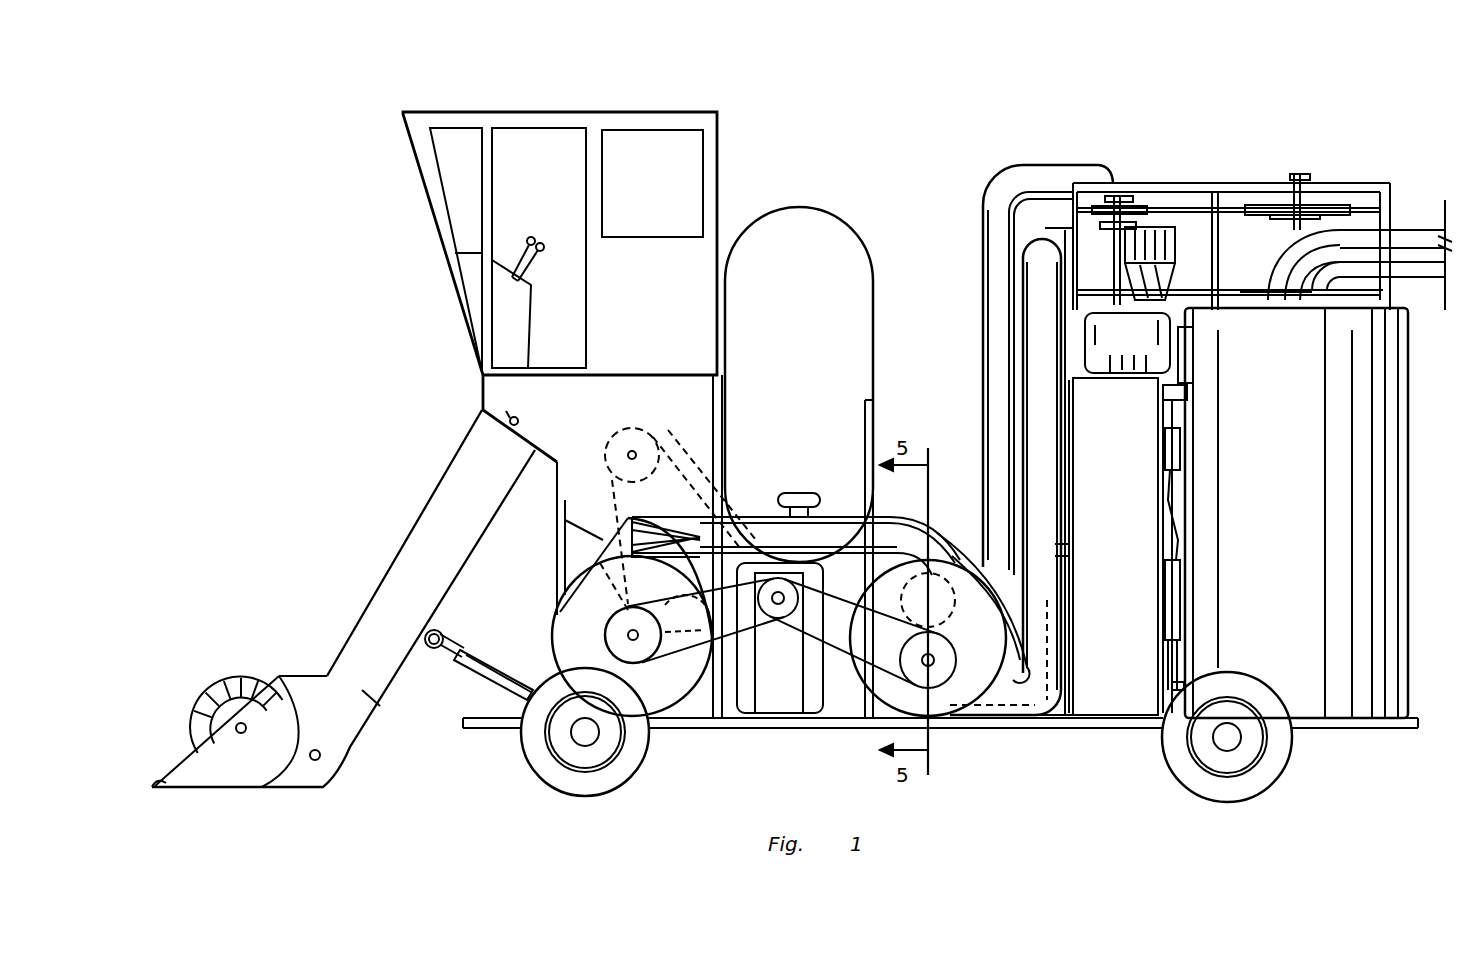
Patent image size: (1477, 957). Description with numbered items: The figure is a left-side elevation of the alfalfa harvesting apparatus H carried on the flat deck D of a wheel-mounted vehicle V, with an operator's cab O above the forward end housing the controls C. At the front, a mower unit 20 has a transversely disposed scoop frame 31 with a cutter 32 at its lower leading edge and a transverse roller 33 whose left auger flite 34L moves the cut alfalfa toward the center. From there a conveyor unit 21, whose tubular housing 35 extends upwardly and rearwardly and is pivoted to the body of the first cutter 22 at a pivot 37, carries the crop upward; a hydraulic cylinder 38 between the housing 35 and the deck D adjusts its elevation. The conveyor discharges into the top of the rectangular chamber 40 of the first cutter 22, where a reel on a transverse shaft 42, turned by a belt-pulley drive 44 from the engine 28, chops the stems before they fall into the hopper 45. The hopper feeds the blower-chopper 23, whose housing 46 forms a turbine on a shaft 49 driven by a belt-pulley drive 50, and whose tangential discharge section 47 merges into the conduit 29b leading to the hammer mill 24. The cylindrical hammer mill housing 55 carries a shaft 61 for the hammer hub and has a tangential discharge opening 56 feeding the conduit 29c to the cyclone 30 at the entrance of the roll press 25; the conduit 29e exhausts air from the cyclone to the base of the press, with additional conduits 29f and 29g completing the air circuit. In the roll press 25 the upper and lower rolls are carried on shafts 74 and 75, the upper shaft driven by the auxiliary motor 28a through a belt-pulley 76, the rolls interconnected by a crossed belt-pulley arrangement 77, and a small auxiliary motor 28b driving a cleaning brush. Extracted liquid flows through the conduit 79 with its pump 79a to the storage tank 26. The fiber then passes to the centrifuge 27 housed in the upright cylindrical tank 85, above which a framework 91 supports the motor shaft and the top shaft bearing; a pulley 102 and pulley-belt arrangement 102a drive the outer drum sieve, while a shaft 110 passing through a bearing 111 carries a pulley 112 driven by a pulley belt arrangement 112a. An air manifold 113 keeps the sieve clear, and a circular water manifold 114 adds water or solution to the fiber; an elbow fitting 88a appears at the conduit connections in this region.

The mower unit 20 is at (188, 679).
The conveyor unit 21 is at (368, 604).
The first cutter 22 is at (702, 407).
The blower-chopper 23 is at (562, 630).
The hammer mill 24 is at (946, 704).
The roll press 25 is at (1126, 509).
The storage tank 26 is at (856, 251).
The centrifuge 27 is at (1400, 585).
The engine 28 is at (745, 710).
The auxiliary motor 28a is at (1135, 348).
The small auxiliary motor 28b is at (1176, 432).
The conduit 29b is at (886, 528).
The conduit 29c is at (1044, 593).
The conduit 29e is at (992, 476).
The conduit 29f is at (1168, 690).
The conduit 29g is at (1430, 246).
The cyclone 30 is at (1160, 253).
The scoop frame 31 is at (236, 770).
The cutter 32 is at (160, 786).
The transverse roller 33 is at (196, 732).
The left auger flite 34L is at (212, 716).
The tubular housing 35 is at (393, 705).
The pivot 37 is at (526, 412).
The hydraulic cylinder 38 is at (484, 677).
The rectangular chamber 40 is at (652, 415).
The transverse shaft 42 is at (612, 450).
The belt-pulley drive 44 is at (632, 490).
The hopper 45 is at (607, 545).
The blower-chopper housing 46 is at (574, 652).
The tangential discharge section 47 is at (622, 546).
The shaft 49 is at (630, 632).
The belt-pulley drive 50 is at (683, 643).
The hammer mill housing 55 is at (874, 682).
The tangential discharge opening 56 is at (1032, 721).
The shaft 61 is at (934, 658).
The shaft 74 is at (1180, 448).
The shaft 75 is at (1180, 581).
The belt-pulley 76 is at (1062, 401).
The belt-pulley arrangement 77 is at (1178, 523).
The conduit 79 is at (1062, 551).
The pump 79a is at (810, 490).
The cylindrical tank 85 is at (1400, 369).
The elbow 88a is at (976, 532).
The framework 91 is at (1253, 189).
The pulley 102 is at (1362, 291).
The pulley-belt arrangement 102a is at (1232, 268).
The shaft 110 is at (1300, 180).
The bearing 111 is at (1290, 246).
The pulley 112 is at (1336, 205).
The pulley belt arrangement 112a is at (1190, 178).
The air manifold 113 is at (1185, 368).
The circular water manifold 114 is at (1180, 680).
The controls C is at (541, 236).
The operator's cab O is at (708, 112).
The alfalfa harvesting apparatus H is at (942, 192).
The vehicle V is at (543, 789).
The deck D is at (850, 730).